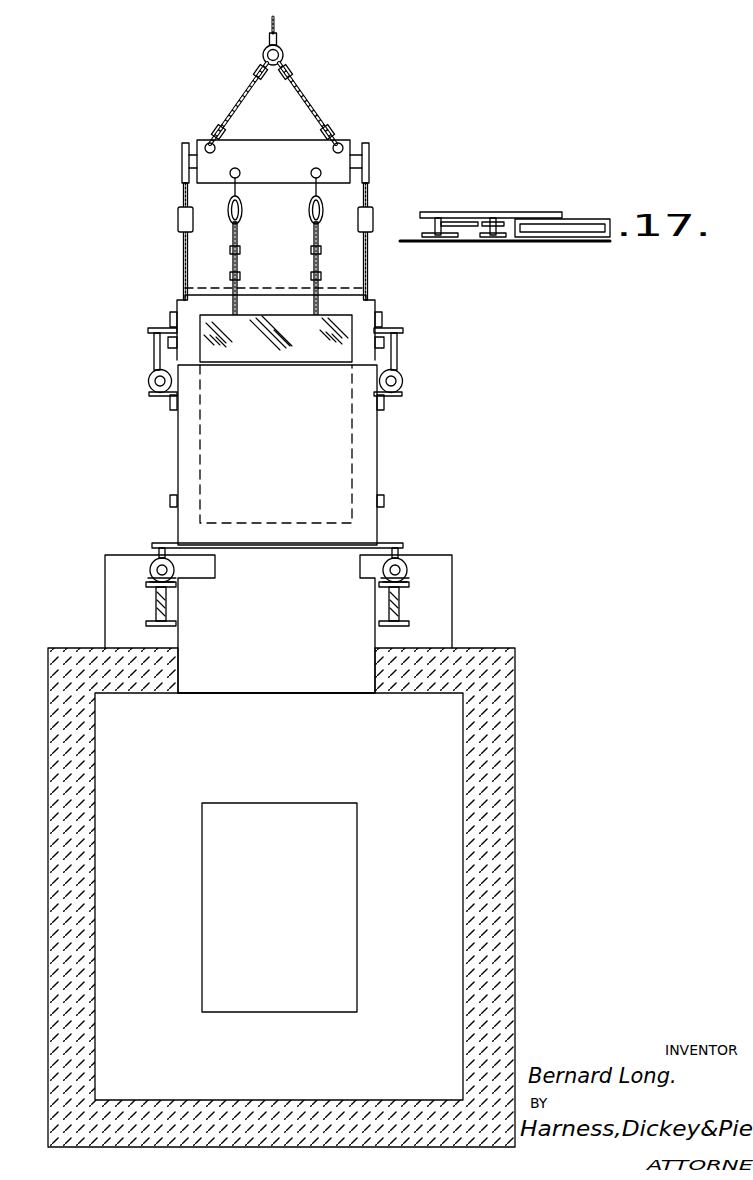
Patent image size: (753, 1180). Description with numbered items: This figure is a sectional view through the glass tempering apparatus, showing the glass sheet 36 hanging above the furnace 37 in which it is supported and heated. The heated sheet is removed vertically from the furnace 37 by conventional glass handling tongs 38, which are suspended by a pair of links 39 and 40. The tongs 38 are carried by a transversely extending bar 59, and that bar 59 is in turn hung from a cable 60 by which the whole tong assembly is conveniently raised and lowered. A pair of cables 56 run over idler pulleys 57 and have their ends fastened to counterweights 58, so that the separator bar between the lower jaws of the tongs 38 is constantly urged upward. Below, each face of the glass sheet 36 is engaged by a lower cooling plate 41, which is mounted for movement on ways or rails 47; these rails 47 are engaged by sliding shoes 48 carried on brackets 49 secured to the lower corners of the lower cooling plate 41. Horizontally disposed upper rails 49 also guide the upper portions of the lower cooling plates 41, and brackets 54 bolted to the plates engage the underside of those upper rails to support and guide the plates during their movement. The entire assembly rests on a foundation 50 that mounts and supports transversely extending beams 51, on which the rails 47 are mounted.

The glass sheet 36 is at (352, 345).
The furnace 37 is at (443, 768).
The glass handling tongs 38 is at (230, 263).
The link 39 is at (243, 224).
The link 40 is at (309, 193).
The lower cooling plate 41 is at (178, 461).
The rails 47 is at (160, 573).
The sliding shoes 48 is at (150, 566).
The brackets / upper rails 49 is at (149, 380).
The foundation 50 is at (112, 629).
The transversely extending beams 51 is at (158, 600).
The brackets 54 is at (168, 395).
The cables 56 is at (368, 260).
The idler pulleys 57 is at (182, 160).
The counterweights 58 is at (178, 219).
The transversely extending bar 59 is at (283, 140).
The cable 60 is at (278, 29).